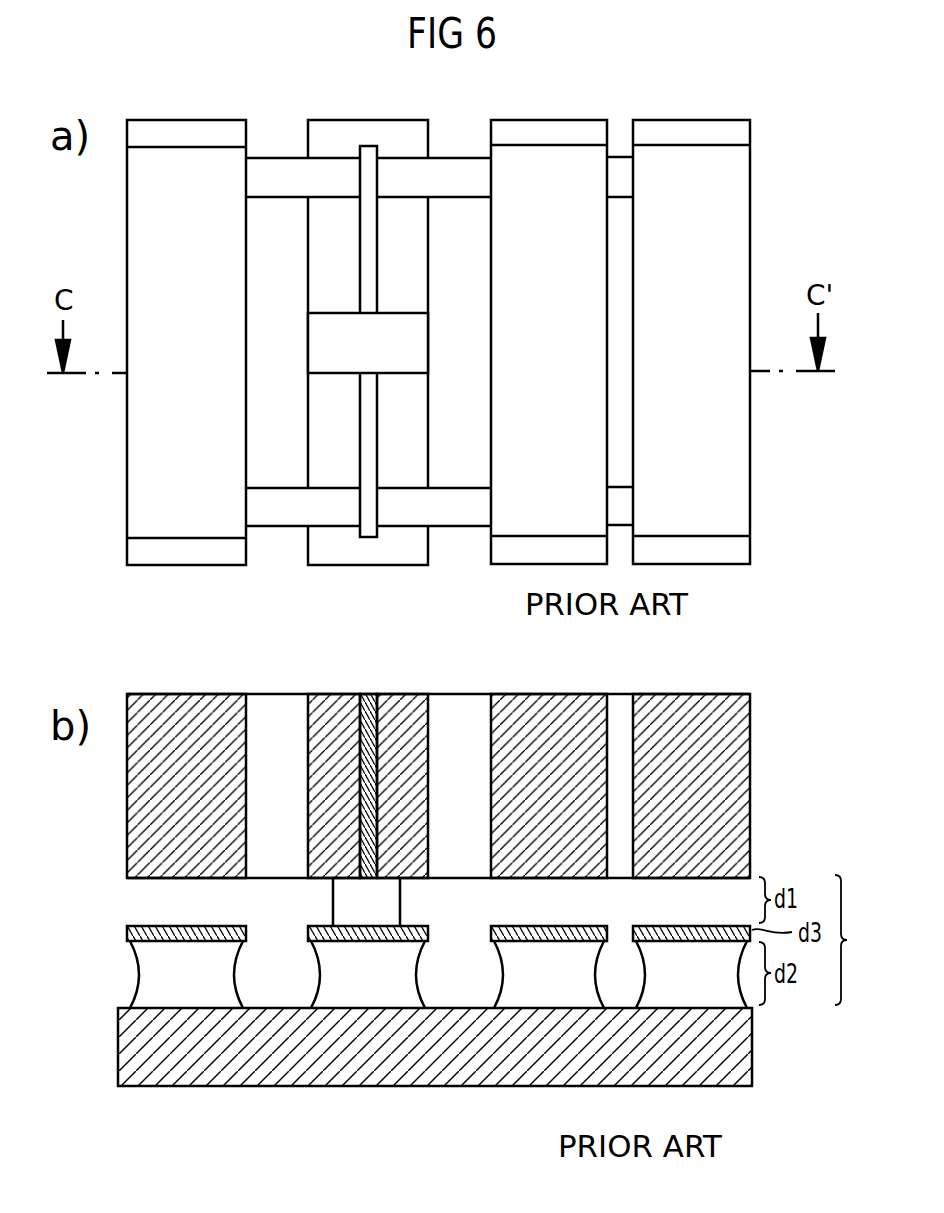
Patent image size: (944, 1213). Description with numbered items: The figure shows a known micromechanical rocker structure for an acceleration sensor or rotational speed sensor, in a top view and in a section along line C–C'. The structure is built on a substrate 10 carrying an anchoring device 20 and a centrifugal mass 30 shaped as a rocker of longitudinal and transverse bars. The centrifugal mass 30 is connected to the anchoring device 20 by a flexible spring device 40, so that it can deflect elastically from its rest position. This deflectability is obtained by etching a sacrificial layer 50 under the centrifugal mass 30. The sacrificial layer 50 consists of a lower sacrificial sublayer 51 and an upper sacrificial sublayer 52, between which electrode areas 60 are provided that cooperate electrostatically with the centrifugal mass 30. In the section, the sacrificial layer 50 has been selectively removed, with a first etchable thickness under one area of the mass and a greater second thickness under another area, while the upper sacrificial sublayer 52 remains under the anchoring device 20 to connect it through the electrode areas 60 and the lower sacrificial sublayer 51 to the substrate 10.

The substrate 10 is at (745, 1047).
The anchoring device 20 is at (417, 343).
The centrifugal mass 30 is at (749, 212).
The flexible spring device 40 is at (377, 250).
The sacrificial layer 50 is at (856, 940).
The lower sacrificial sublayer 51 is at (233, 972).
The upper sacrificial sublayer 52 is at (400, 900).
The electrode areas 60 is at (186, 926).